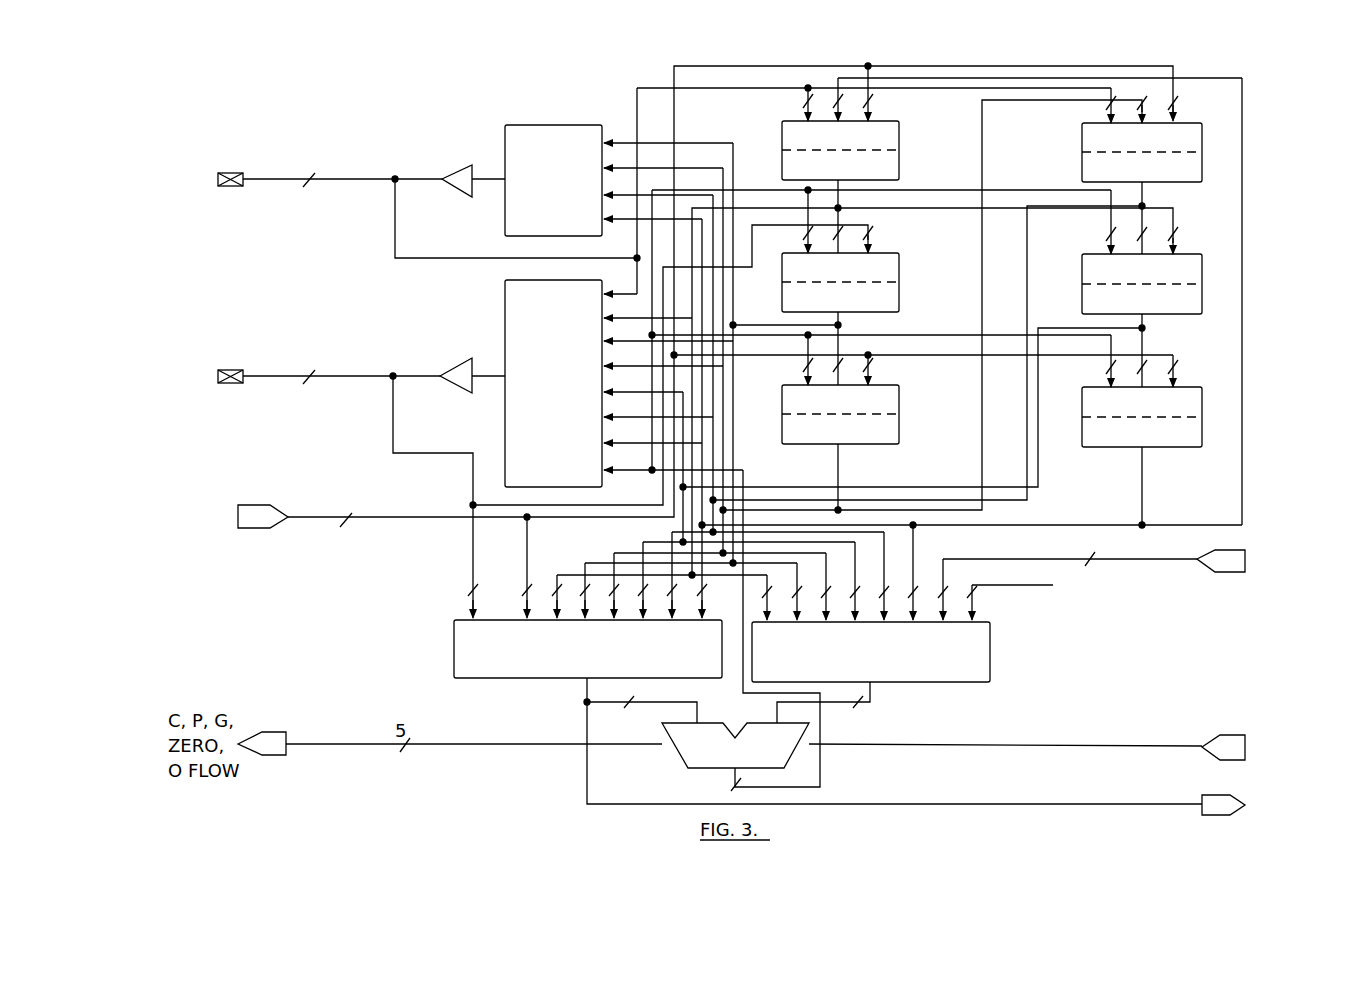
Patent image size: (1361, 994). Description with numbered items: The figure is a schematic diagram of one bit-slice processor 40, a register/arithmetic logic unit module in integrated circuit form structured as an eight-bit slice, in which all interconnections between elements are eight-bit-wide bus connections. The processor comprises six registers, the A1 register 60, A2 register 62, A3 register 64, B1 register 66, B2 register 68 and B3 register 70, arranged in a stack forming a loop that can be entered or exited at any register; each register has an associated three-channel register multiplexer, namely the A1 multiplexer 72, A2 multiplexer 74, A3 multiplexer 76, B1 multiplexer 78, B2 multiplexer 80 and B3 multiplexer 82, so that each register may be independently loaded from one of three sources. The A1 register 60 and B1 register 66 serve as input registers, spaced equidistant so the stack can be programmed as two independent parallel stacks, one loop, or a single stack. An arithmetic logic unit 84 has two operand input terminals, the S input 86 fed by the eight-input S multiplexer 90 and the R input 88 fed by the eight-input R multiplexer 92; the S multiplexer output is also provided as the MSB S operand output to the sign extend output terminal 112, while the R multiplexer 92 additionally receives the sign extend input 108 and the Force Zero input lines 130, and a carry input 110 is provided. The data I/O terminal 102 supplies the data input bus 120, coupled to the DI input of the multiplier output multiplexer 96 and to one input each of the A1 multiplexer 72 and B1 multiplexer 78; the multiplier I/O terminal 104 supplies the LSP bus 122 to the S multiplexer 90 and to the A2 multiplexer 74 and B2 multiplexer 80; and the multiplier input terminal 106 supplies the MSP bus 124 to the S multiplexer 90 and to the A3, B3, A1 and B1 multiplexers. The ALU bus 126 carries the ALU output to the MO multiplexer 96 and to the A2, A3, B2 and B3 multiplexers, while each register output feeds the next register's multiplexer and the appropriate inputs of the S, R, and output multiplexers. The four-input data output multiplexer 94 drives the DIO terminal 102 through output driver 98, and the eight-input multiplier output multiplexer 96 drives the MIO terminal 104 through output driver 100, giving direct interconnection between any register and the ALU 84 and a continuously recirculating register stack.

The bit-slice processor 40 is at (1272, 321).
The A1 register 60 is at (900, 165).
The A2 register 62 is at (900, 298).
The A3 register 64 is at (900, 428).
The B1 register 66 is at (1202, 165).
The B2 register 68 is at (1202, 302).
The B3 register 70 is at (1202, 433).
The A1 multiplexer 72 is at (900, 133).
The A2 multiplexer 74 is at (900, 266).
The A3 multiplexer 76 is at (900, 396).
The B1 multiplexer 78 is at (1202, 133).
The B2 multiplexer 80 is at (1202, 271).
The B3 multiplexer 82 is at (1202, 401).
The arithmetic logic unit 84 is at (678, 754).
The S input 86 is at (697, 724).
The R input 88 is at (777, 724).
The S input multiplexer 90 is at (454, 633).
The R input multiplexer 92 is at (992, 650).
The data output multiplexer 94 is at (566, 125).
The multiplier output multiplexer 96 is at (505, 304).
The output driver 98 is at (462, 178).
The output driver 100 is at (460, 372).
The data I/O terminal 102 is at (230, 170).
The multiplier I/O terminal 104 is at (230, 367).
The multiplier input terminal 106 is at (256, 503).
The sign extend input 108 is at (1235, 552).
The carry input 110 is at (1231, 736).
The sign extend output 112 is at (1222, 795).
The data input bus 120 is at (443, 257).
The multiplier input bus 122 is at (458, 453).
The MSP bus 124 is at (417, 517).
The ALU bus 126 is at (820, 768).
The Force Zero input lines 130 is at (1010, 586).